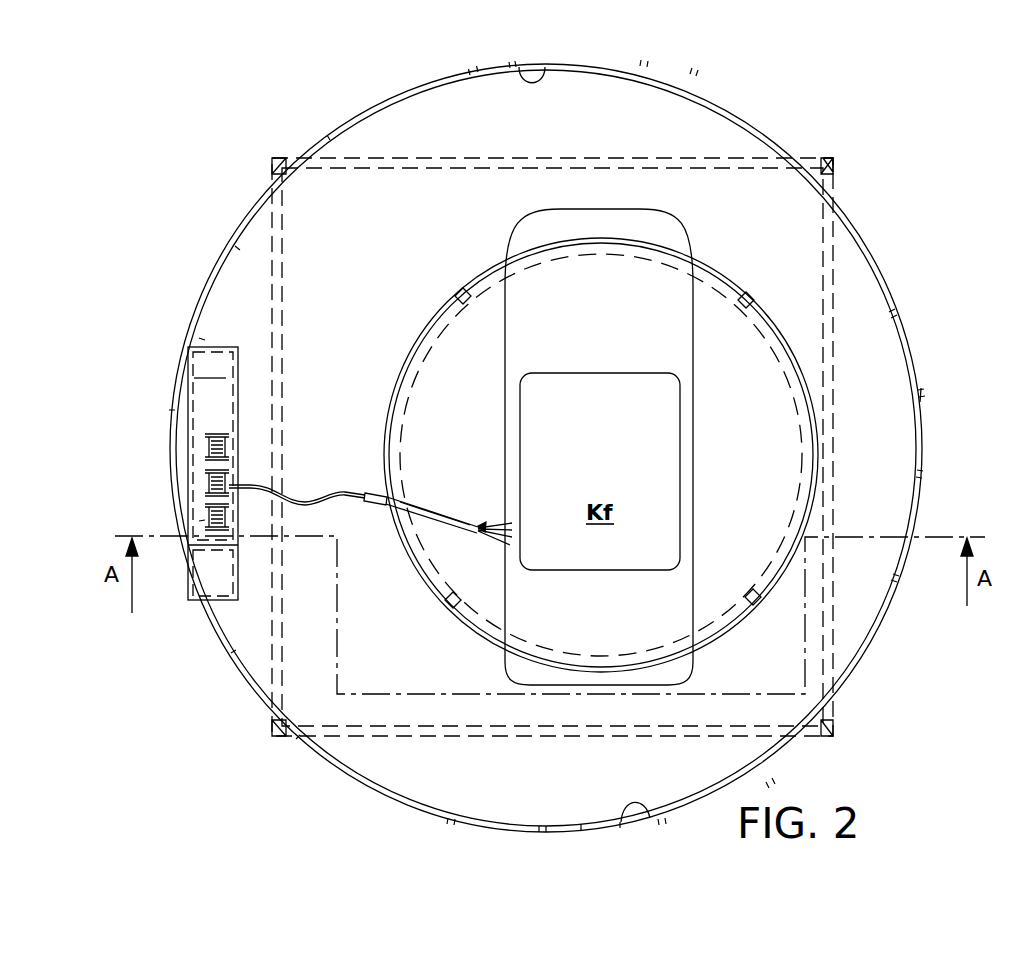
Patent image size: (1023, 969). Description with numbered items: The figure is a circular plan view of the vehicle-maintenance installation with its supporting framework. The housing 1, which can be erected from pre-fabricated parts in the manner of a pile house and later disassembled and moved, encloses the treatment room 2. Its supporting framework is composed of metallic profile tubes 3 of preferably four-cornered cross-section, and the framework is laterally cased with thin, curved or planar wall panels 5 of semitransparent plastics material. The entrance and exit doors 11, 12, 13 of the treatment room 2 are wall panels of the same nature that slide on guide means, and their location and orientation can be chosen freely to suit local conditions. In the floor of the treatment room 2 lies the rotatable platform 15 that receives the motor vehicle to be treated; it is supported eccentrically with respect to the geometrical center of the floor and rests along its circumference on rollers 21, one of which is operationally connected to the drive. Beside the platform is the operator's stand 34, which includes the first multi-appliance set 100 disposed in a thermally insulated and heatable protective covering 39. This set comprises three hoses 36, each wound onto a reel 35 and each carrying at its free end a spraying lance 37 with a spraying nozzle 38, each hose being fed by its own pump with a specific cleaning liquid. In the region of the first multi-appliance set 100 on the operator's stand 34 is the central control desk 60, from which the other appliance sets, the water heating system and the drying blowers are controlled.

The housing 1 is at (922, 346).
The treatment room 2 is at (363, 208).
The metallic profile tubes 3 is at (832, 158).
The wall panels 5 is at (876, 242).
The entrance and exit door 11 is at (646, 820).
The entrance and exit door 12 is at (922, 399).
The entrance and exit door 13 is at (517, 68).
The rotatable platform 15 is at (437, 332).
The rollers 21 is at (450, 602).
The operator's stand 34 is at (368, 419).
The reel 35 is at (218, 440).
The hoses 36 is at (350, 498).
The spraying lance 37 is at (432, 512).
The spraying nozzle 38 is at (482, 533).
The protective covering 39 is at (204, 442).
The central control desk 60 is at (212, 575).
The first multi-appliance set 100 is at (216, 347).